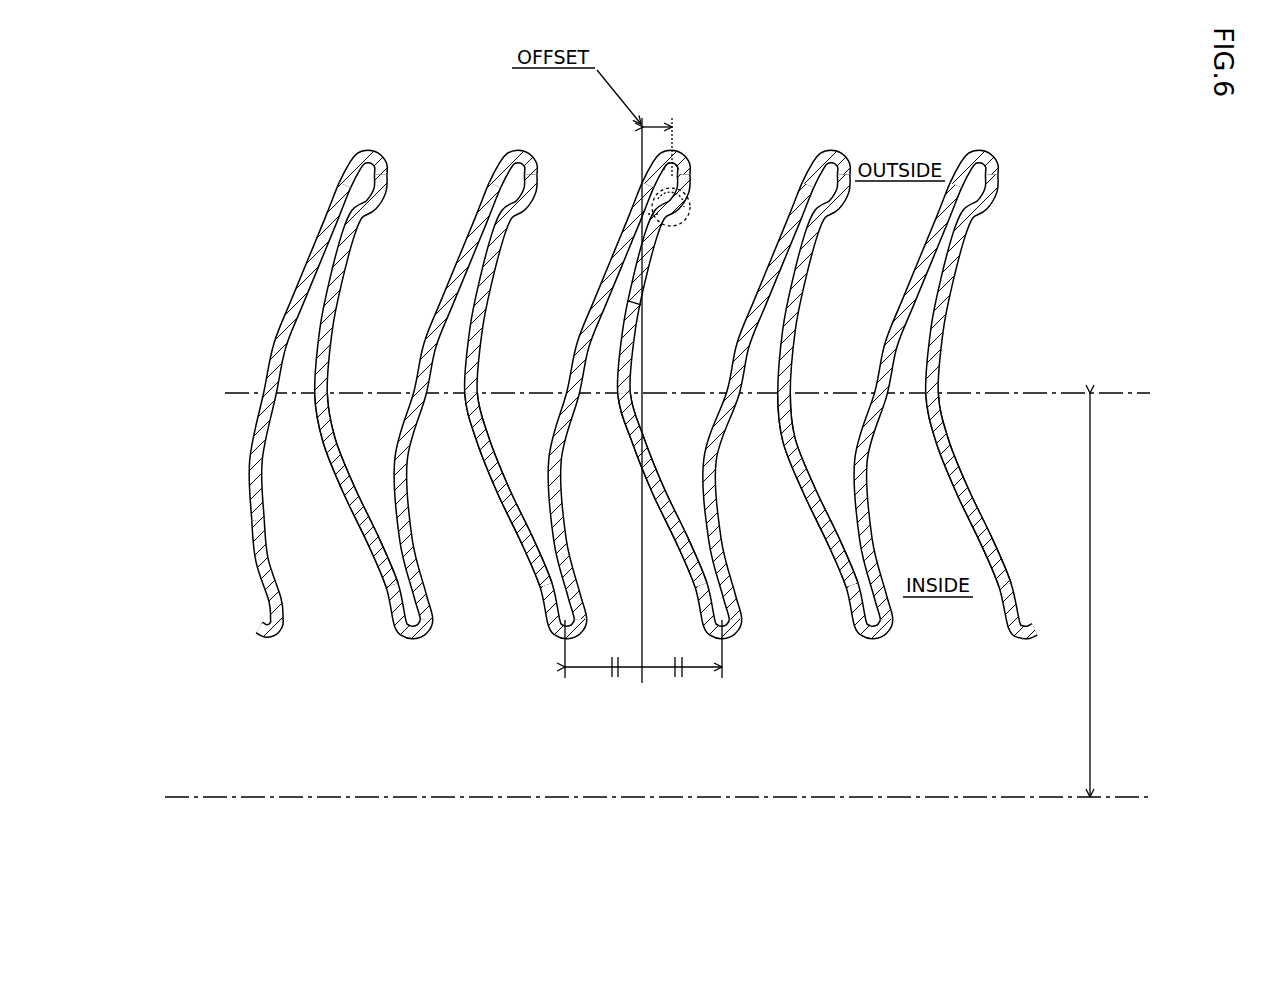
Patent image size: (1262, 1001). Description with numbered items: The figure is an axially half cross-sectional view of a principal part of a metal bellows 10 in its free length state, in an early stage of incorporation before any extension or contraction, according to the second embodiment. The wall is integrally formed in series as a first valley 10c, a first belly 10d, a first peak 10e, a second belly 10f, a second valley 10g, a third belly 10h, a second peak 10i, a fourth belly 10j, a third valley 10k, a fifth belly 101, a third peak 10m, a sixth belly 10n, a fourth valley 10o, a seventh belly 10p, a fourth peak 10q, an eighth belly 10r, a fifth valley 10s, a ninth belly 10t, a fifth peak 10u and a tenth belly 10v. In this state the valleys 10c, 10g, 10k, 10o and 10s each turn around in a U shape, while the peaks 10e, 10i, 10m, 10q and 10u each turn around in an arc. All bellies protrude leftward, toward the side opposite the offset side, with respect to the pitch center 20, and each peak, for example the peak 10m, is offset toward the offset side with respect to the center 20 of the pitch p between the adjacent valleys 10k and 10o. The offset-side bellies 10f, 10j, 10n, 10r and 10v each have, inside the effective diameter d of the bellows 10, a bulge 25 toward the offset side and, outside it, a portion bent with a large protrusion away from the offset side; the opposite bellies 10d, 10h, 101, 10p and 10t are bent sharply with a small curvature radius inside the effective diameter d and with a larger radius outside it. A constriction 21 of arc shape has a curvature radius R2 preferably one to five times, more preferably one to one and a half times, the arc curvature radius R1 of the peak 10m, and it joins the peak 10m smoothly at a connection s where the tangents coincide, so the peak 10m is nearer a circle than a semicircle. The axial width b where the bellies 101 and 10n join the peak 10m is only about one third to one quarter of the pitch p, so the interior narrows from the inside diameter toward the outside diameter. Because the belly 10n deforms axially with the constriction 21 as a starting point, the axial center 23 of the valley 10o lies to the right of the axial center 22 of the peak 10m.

The metal bellows 10 is at (802, 55).
The valley 10c is at (262, 630).
The first belly 10d is at (265, 373).
The first peak 10e is at (362, 151).
The second belly 10f is at (331, 341).
The second valley 10g is at (420, 625).
The third belly 10h is at (438, 310).
The second peak 10i is at (516, 151).
The fourth belly 10j is at (480, 345).
The valley 10k is at (568, 627).
The peak 10m is at (676, 150).
The belly 10n is at (633, 345).
The valley 10o is at (730, 625).
The belly 10p is at (744, 314).
The peak 10q is at (833, 150).
The belly 10r is at (793, 345).
The valley 10s is at (876, 627).
The belly 10t is at (899, 310).
The peak 10u is at (984, 150).
The tenth belly 10v is at (941, 347).
The belly 101 is at (590, 322).
The pitch center 20 is at (642, 643).
The constriction 21 is at (691, 209).
The axial center of the peak 22 is at (671, 124).
The axial center of the valley 23 is at (720, 668).
The bulge 25 is at (362, 494).
The curvature radius of the peak R1 is at (680, 170).
The curvature radius of the constriction R2 is at (672, 214).
The connection s is at (652, 212).
The axial width b is at (632, 304).
The pitch p is at (630, 670).
The effective diameter d is at (1101, 595).